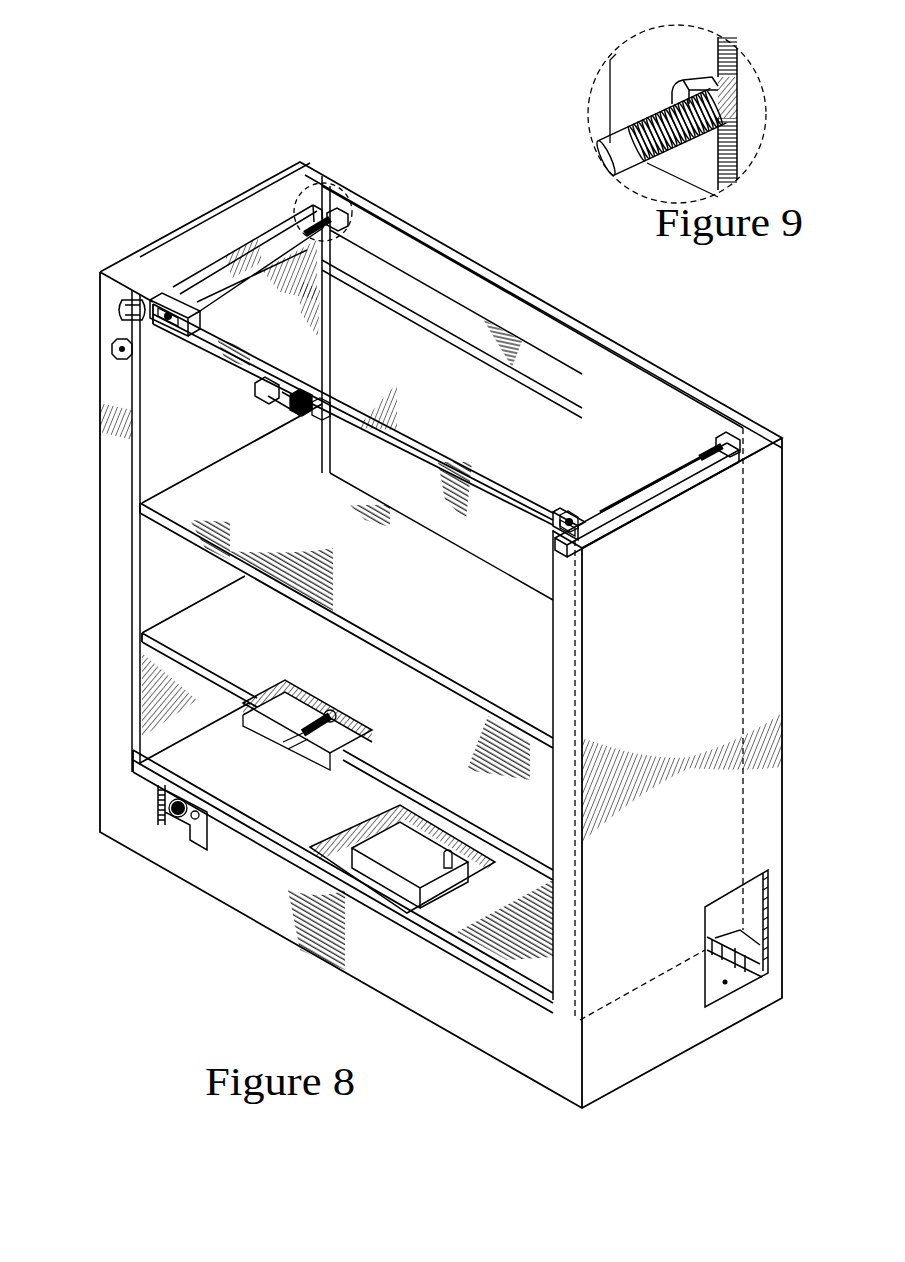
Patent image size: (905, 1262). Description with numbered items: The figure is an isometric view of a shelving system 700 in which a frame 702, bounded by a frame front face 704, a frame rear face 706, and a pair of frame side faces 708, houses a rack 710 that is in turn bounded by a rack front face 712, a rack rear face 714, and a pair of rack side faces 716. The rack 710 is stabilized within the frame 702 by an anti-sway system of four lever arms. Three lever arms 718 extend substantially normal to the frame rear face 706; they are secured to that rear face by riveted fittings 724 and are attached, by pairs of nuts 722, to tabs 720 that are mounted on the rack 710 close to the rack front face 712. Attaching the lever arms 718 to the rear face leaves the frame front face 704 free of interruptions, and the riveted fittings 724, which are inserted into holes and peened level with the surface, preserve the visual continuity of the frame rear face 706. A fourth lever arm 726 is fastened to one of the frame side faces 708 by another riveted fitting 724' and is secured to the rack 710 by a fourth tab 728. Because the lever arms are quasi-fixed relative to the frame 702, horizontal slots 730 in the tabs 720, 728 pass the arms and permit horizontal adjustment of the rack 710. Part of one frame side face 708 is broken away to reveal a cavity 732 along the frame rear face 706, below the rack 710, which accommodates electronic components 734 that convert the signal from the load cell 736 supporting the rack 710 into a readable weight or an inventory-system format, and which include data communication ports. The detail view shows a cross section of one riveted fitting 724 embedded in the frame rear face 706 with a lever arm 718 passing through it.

In FIG. 8, the shelving system 700 is at (348, 120).
In FIG. 8, the frame 702 is at (144, 244).
In FIG. 8, the frame front face 704 is at (112, 748).
In FIG. 8, the frame rear face 706 is at (528, 306).
In FIG. 9, the frame rear face 706 is at (737, 143).
In FIG. 8, the frame side faces 708 is at (140, 285).
In FIG. 8, the rack 710 is at (257, 214).
In FIG. 8, the rack front face 712 is at (148, 520).
In FIG. 8, the rack rear face 714 is at (768, 437).
In FIG. 8, the rack side faces 716 is at (598, 525).
In FIG. 8, the lever arms 718 is at (605, 505).
In FIG. 9, the lever arms 718 is at (614, 152).
In FIG. 8, the tabs 720 is at (170, 291).
In FIG. 8, the nuts 722 is at (112, 348).
In FIG. 8, the riveted fittings 724 is at (501, 571).
In FIG. 9, the riveted fittings 724 is at (631, 73).
In FIG. 8, the riveted fitting 724' is at (95, 297).
In FIG. 8, the fourth lever arm 726 is at (257, 388).
In FIG. 8, the fourth tab 728 is at (273, 415).
In FIG. 8, the horizontal slots 730 is at (190, 322).
In FIG. 8, the cavity 732 is at (725, 984).
In FIG. 8, the electronic components 734 is at (762, 973).
In FIG. 8, the load cell 736 is at (410, 888).